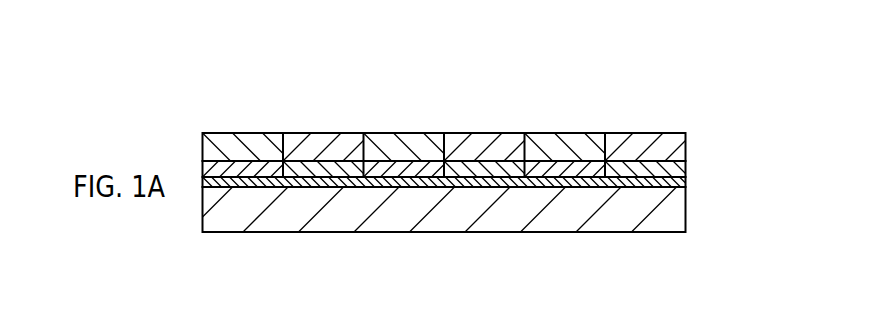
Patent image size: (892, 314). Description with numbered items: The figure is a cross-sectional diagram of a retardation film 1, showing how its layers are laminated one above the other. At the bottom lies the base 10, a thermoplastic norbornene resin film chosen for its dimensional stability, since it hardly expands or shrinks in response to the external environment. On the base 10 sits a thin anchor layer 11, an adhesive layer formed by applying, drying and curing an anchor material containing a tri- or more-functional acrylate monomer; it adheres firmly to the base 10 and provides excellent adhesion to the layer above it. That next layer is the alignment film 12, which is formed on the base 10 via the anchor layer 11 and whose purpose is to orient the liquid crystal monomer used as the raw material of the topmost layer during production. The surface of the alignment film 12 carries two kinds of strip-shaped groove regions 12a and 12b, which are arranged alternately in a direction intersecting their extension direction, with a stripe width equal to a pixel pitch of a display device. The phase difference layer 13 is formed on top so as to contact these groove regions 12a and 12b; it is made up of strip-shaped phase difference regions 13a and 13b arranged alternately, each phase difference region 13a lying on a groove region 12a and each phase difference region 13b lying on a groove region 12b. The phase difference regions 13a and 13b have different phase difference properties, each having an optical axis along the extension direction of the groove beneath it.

The retardation film 1 is at (695, 42).
The base 10 is at (677, 207).
The anchor layer 11 is at (680, 183).
The alignment film 12 is at (697, 162).
The groove region 12a is at (563, 253).
The groove region 12b is at (644, 253).
The phase difference layer 13 is at (697, 135).
The phase difference region 13a is at (563, 142).
The phase difference region 13b is at (644, 142).